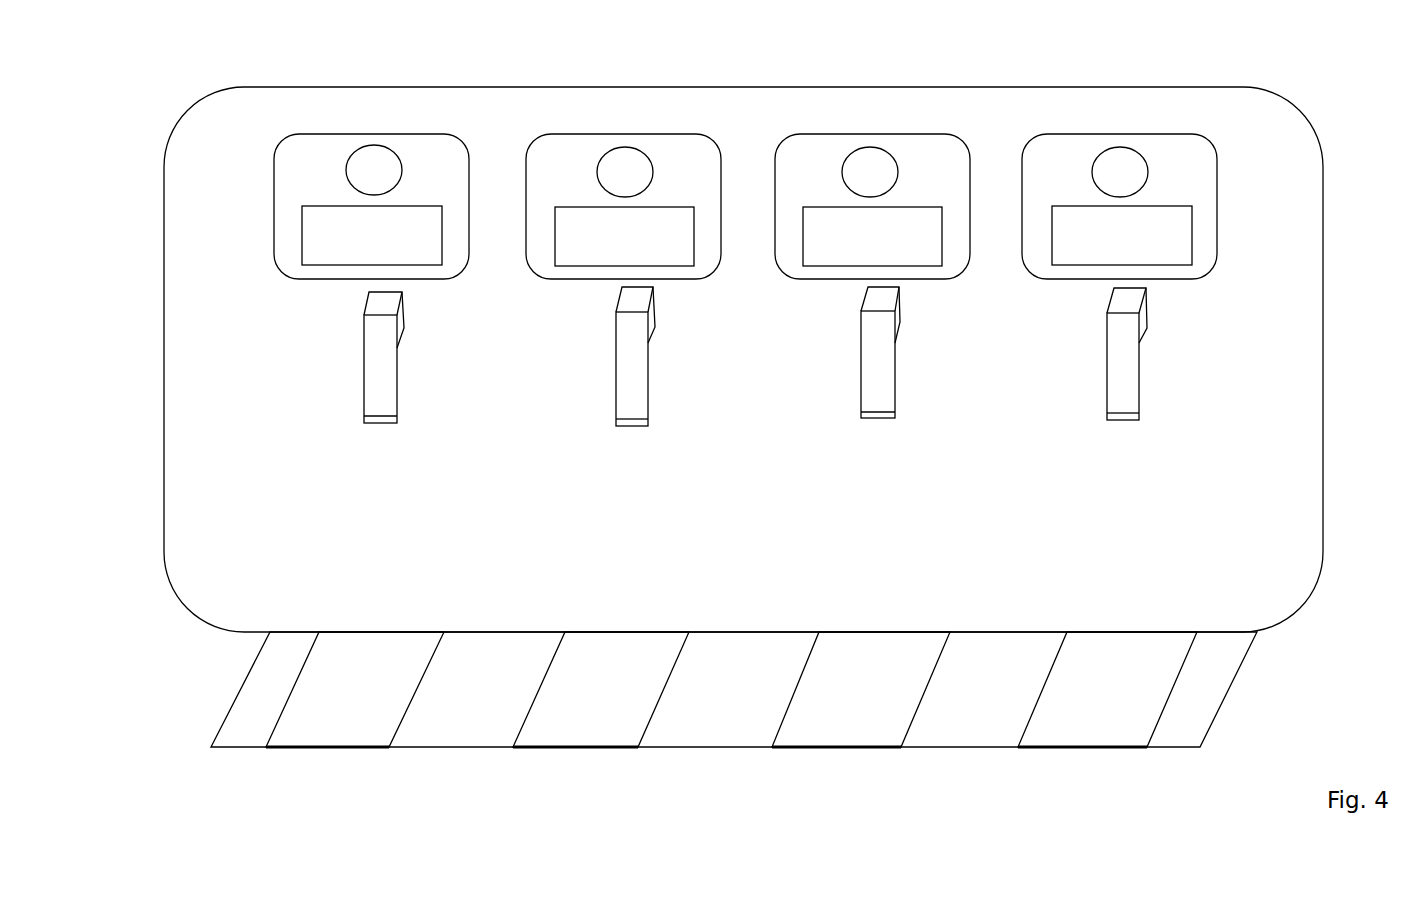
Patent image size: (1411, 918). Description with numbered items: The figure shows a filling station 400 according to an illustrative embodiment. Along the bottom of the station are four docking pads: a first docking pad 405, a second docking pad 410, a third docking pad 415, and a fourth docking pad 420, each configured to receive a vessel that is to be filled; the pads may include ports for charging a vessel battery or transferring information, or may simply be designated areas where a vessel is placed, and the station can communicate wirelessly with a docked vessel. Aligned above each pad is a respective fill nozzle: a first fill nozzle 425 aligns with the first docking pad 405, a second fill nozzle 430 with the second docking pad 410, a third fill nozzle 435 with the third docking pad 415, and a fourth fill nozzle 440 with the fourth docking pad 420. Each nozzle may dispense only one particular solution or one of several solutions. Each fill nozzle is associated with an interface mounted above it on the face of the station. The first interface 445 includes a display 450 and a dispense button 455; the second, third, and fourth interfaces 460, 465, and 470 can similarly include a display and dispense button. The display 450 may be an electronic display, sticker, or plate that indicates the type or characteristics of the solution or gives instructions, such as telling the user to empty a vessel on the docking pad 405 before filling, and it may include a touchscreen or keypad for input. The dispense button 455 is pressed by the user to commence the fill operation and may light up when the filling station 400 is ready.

The filling station 400 is at (138, 138).
The first docking pad 405 is at (356, 728).
The second docking pad 410 is at (597, 717).
The third docking pad 415 is at (840, 728).
The fourth docking pad 420 is at (1093, 730).
The first fill nozzle 425 is at (368, 350).
The second fill nozzle 430 is at (620, 343).
The third fill nozzle 435 is at (863, 343).
The fourth fill nozzle 440 is at (1110, 352).
The first interface 445 is at (312, 138).
The display 450 is at (314, 250).
The dispense button 455 is at (381, 161).
The second interface 460 is at (673, 145).
The third interface 465 is at (922, 139).
The fourth interface 470 is at (1158, 135).